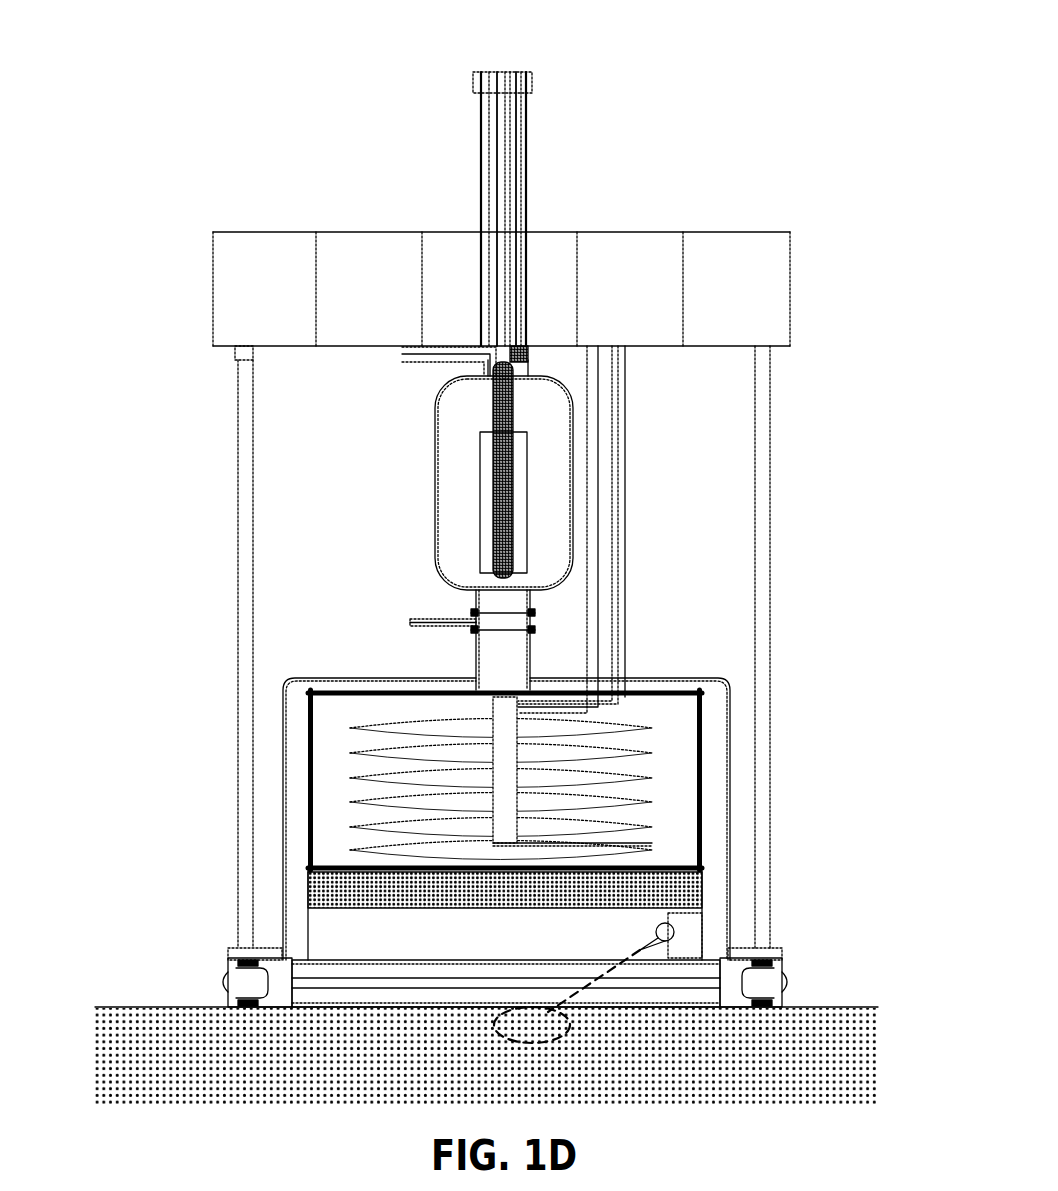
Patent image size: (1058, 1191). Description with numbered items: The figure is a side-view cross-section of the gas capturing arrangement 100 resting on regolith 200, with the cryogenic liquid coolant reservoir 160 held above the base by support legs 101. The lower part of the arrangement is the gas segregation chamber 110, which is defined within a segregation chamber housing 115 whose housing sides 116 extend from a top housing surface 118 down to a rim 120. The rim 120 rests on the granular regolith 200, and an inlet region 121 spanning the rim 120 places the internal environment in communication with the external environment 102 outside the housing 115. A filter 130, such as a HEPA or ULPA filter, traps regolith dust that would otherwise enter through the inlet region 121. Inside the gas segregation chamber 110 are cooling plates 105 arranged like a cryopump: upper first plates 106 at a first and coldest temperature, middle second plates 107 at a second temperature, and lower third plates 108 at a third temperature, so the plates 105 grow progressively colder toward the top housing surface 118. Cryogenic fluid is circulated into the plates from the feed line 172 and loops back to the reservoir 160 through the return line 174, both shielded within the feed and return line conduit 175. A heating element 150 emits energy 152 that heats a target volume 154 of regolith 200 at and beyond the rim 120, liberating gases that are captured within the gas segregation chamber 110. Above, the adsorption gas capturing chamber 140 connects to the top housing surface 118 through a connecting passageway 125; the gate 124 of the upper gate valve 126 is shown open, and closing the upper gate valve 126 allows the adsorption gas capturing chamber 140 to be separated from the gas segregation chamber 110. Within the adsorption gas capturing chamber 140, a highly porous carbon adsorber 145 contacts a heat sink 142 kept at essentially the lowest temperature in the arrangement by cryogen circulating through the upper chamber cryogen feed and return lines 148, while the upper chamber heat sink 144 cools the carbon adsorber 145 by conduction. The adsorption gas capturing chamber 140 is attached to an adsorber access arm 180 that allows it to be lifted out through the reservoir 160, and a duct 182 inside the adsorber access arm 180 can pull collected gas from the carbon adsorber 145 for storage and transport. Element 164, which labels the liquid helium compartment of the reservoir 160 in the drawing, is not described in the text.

The gas capturing arrangement 100 is at (485, 29).
The support legs 101 is at (236, 514).
The external environment 102 is at (158, 1002).
The cooling plates 105 is at (385, 700).
The first plate or plates 106 is at (362, 753).
The second plate or plates 107 is at (362, 802).
The third plate or plates 108 is at (362, 850).
The gas segregation chamber 110 is at (510, 750).
The segregation chamber housing 115 is at (657, 680).
The housing sides 116 is at (283, 818).
The top housing surface 118 is at (350, 680).
The rim 120 is at (305, 1010).
The inlet region 121 is at (385, 1012).
The gate 124 is at (450, 620).
The connecting passageway 125 is at (532, 652).
The upper gate valve 126 is at (505, 633).
The filter 130 is at (463, 910).
The adsorption gas capturing chamber 140 is at (435, 518).
The heat sink 142 is at (522, 419).
The upper chamber heat sink 144 is at (492, 427).
The carbon adsorber 145 is at (480, 459).
The upper chamber cryogen feed and return lines 148 is at (460, 362).
The heating element 150 is at (700, 962).
The energy 152 is at (590, 980).
The target volume 154 is at (490, 1020).
The cryogenic liquid coolant reservoir 160 is at (790, 283).
The liquid helium supply 164 is at (365, 243).
The feed line 172 is at (607, 437).
The return line 174 is at (615, 515).
The feed and return line conduit 175 is at (627, 607).
The adsorber access arm 180 is at (478, 182).
The duct 182 is at (505, 147).
The regolith 200 is at (820, 1060).